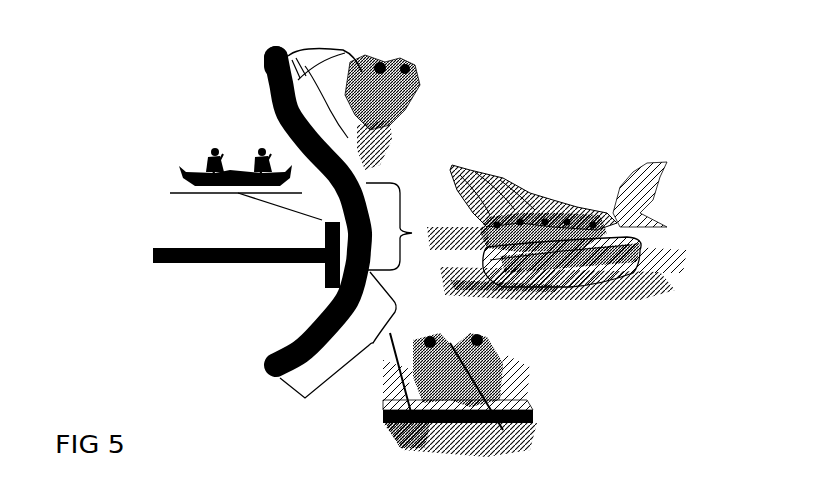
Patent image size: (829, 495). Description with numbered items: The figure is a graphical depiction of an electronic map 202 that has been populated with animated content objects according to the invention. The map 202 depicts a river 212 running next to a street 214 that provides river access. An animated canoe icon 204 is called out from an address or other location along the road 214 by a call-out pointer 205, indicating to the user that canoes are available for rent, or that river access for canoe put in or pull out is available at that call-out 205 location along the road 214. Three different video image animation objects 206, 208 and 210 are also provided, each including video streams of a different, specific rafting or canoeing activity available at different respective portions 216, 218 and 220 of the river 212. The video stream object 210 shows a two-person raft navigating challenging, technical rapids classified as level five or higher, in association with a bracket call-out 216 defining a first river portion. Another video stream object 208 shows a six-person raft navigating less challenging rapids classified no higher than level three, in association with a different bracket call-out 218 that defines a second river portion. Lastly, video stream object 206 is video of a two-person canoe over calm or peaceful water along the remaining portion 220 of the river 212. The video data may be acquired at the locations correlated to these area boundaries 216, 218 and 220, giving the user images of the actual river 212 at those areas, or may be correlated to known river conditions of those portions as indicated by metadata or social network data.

The electronic map 202 is at (134, 88).
The animated canoe icon 204 is at (174, 150).
The call-out pointer 205 is at (322, 220).
The video stream object 206 is at (412, 60).
The video stream object 208 is at (554, 148).
The video stream object 210 is at (549, 383).
The river 212 is at (267, 50).
The street 214 is at (263, 264).
The bracket call-out 216 is at (307, 400).
The bracket call-out 218 is at (397, 177).
The remaining portion of the river 220 is at (268, 114).